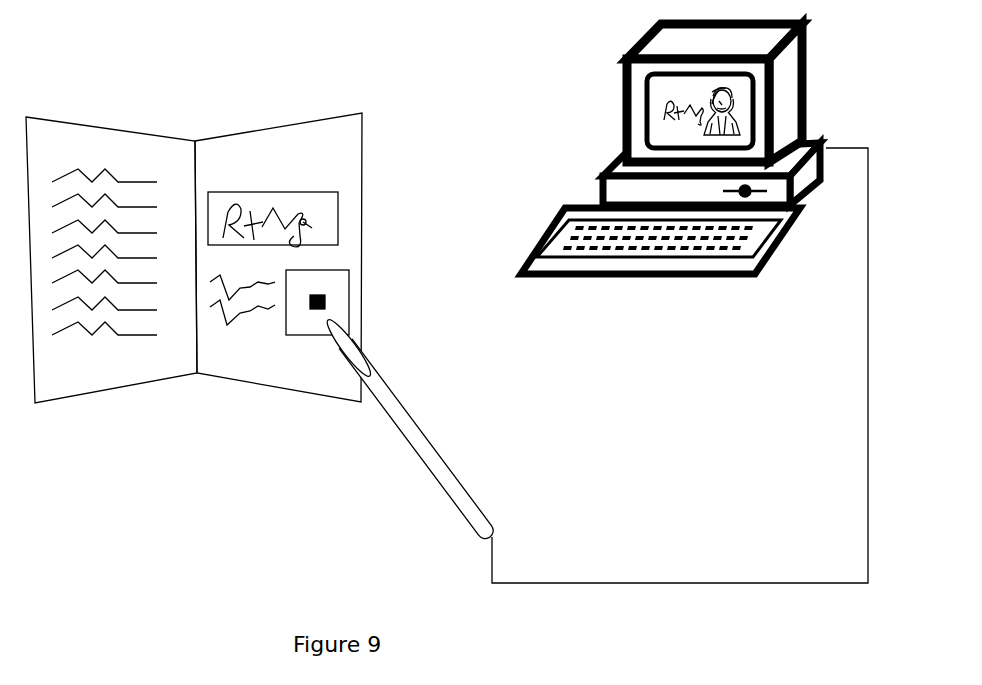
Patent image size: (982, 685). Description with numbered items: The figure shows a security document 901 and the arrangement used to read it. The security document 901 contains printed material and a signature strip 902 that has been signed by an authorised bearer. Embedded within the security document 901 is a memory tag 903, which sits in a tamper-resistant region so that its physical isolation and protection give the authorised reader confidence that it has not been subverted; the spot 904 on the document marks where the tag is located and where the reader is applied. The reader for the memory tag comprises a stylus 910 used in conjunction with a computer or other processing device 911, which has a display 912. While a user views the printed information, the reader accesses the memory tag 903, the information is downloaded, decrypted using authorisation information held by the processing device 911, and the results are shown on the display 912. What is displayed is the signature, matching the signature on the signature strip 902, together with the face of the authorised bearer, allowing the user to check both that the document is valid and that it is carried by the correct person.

The security document 901 is at (155, 228).
The signature strip 902 is at (328, 230).
The memory tag 903 is at (300, 335).
The contact mark 904 is at (327, 309).
The stylus 910 is at (418, 450).
The processing device 911 is at (820, 189).
The display 912 is at (610, 86).